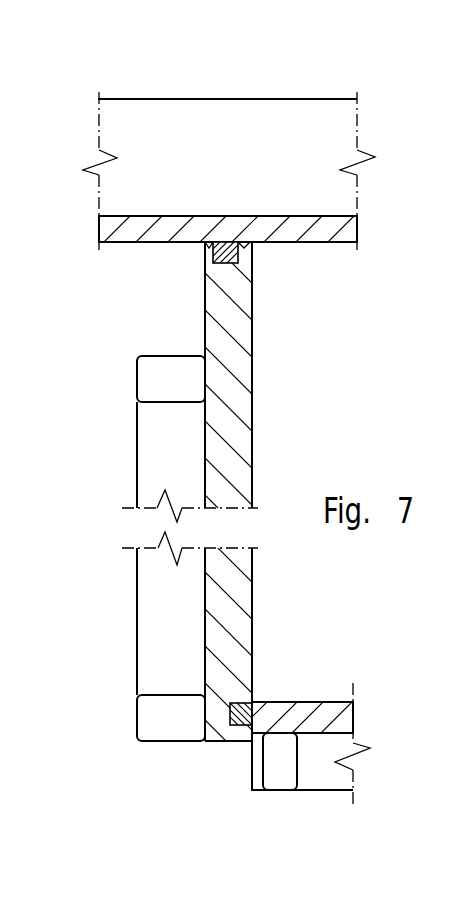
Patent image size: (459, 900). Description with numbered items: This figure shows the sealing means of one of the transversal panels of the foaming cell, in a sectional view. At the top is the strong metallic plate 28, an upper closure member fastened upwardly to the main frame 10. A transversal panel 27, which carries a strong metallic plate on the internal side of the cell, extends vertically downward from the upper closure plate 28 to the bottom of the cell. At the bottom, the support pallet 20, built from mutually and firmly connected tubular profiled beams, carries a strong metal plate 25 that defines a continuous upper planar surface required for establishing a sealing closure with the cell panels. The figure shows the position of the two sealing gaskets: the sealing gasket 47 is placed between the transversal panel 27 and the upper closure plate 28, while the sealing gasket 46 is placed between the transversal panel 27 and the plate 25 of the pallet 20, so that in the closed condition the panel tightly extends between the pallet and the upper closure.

The main frame 10 is at (164, 123).
The metallic plate 28 is at (138, 232).
The sealing gasket 47 is at (247, 253).
The transversal panel 27 is at (158, 462).
The sealing gasket 46 is at (240, 707).
The metal plate 25 is at (330, 713).
The support pallet 20 is at (282, 777).